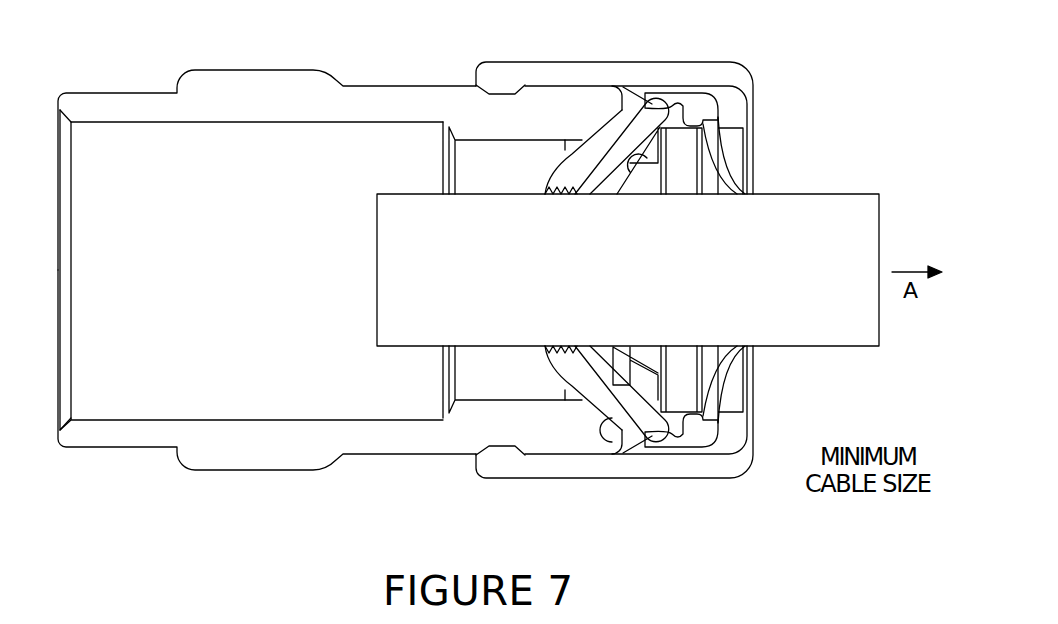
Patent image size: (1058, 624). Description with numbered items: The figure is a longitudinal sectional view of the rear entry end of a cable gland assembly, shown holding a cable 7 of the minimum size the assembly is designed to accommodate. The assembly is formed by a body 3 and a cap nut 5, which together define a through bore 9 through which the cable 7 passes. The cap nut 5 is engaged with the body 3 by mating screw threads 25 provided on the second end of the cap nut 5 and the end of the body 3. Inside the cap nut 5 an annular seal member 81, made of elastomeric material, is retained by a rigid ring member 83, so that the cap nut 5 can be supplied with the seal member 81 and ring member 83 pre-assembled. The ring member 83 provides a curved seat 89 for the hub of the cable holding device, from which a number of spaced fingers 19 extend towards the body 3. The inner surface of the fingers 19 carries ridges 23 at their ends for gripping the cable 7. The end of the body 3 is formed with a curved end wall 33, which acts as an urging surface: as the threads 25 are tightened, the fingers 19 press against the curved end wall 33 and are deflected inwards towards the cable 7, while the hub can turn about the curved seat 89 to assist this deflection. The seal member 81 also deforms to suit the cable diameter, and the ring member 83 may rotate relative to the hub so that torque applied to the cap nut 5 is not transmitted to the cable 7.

The body 3 is at (278, 90).
The cap nut 5 is at (570, 72).
The cable 7 is at (843, 211).
The through bore 9 is at (291, 266).
The fingers 19 is at (650, 430).
The ridges 23 is at (548, 420).
The mating screw threads 25 is at (500, 88).
The curved end wall 33 is at (612, 480).
The seal member 81 is at (725, 158).
The ring member 83 is at (665, 100).
The curved seat 89 is at (700, 475).